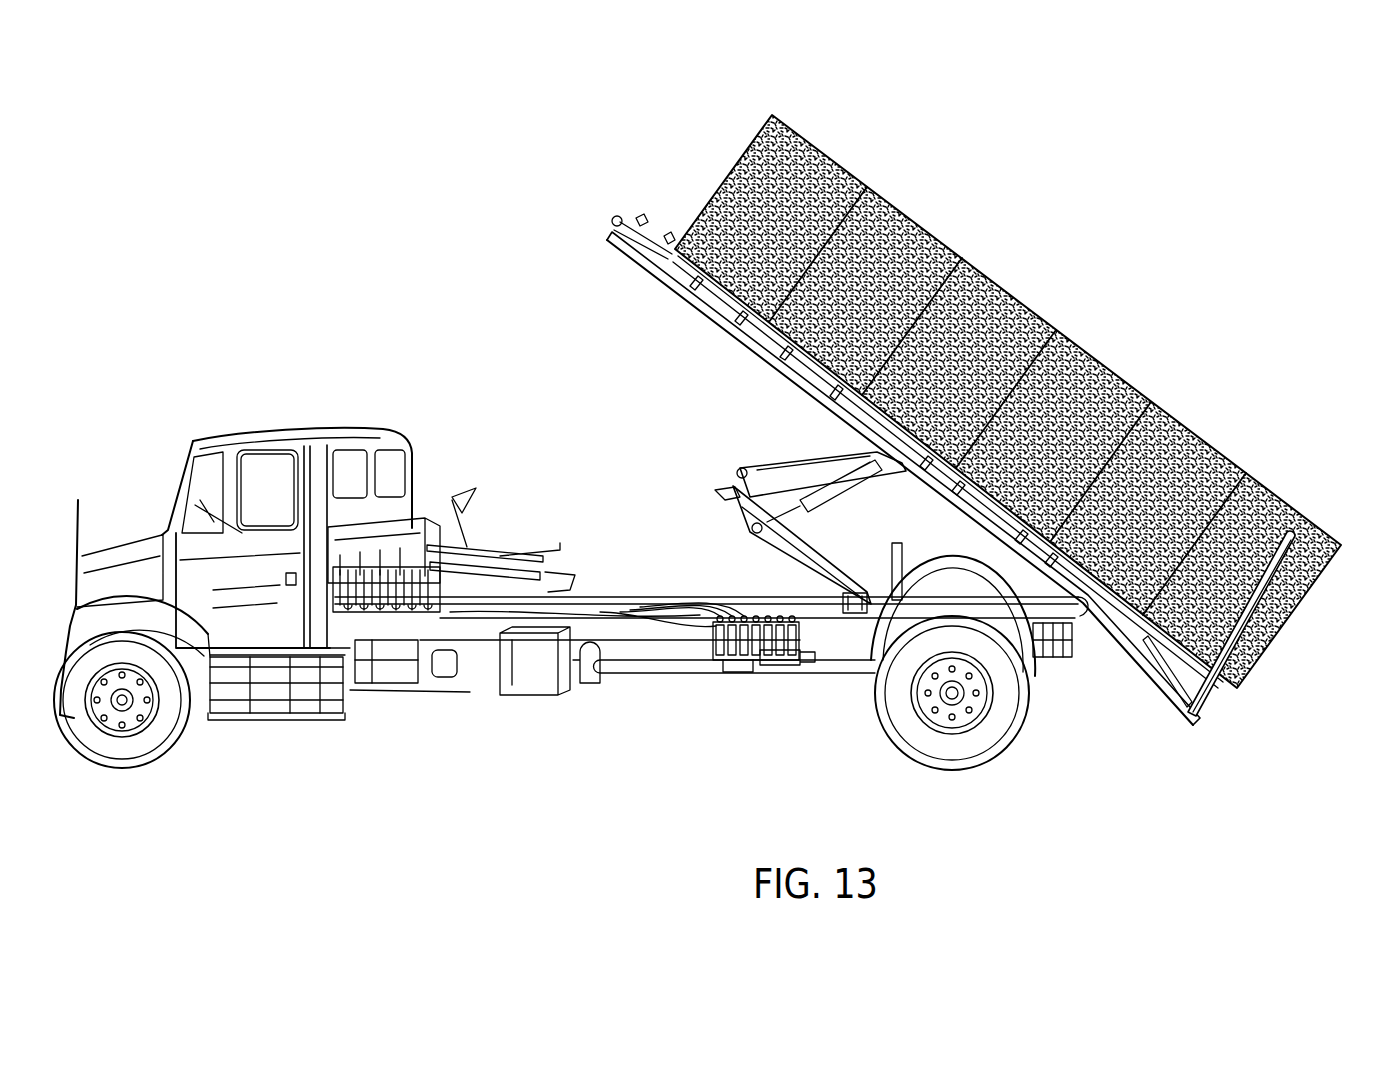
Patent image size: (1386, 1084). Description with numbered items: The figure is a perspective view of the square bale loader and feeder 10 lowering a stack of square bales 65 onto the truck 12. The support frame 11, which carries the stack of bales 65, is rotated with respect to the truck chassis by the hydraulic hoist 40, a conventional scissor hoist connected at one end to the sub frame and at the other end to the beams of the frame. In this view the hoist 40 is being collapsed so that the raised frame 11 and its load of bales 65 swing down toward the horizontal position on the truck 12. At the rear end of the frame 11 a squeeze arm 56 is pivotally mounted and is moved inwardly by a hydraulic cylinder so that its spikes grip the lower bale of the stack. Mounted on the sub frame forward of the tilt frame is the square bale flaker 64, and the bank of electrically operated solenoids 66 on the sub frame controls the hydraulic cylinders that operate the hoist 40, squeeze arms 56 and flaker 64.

The square bale loader and feeder 10 is at (796, 428).
The support frame 11 is at (712, 330).
The truck 12 is at (375, 427).
The hydraulic hoist 40 is at (737, 490).
The squeeze arm 56 is at (1213, 702).
The square bale flaker 64 is at (382, 608).
The square bale 65 is at (719, 194).
The bank of electrically operated solenoids 66 is at (737, 660).